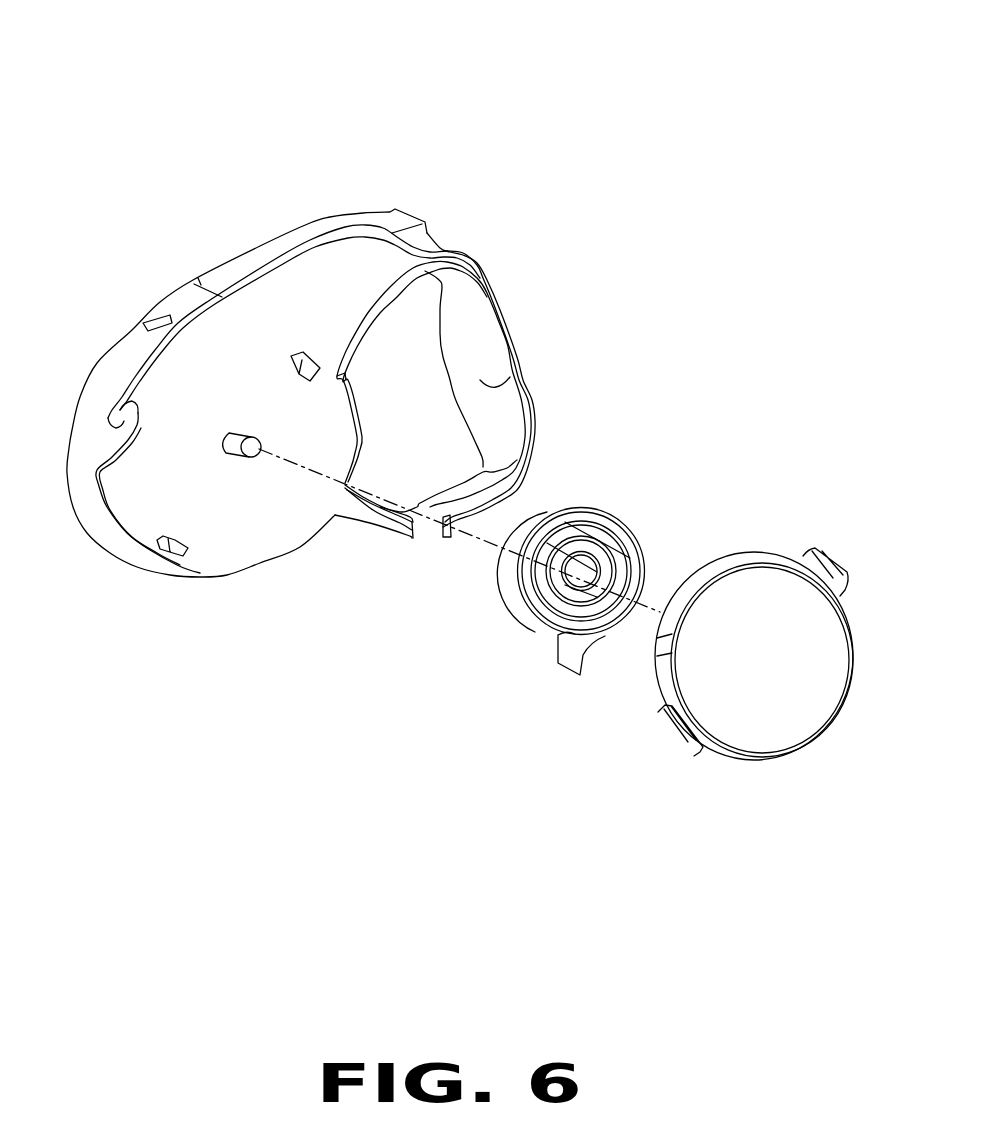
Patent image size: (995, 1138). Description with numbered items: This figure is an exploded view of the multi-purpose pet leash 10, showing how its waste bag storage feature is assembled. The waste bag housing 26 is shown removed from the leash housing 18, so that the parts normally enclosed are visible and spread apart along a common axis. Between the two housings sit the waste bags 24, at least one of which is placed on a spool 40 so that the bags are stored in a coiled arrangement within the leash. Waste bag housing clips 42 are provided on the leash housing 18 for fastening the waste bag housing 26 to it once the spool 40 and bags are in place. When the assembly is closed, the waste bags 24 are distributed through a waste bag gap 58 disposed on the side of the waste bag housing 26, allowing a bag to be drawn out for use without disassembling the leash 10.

The multi-purpose pet leash 10 is at (596, 121).
The leash housing 18 is at (285, 235).
The waste bags 24 is at (560, 512).
The waste bag housing 26 is at (714, 615).
The spool 40 is at (233, 452).
The waste bag housing clips 42 is at (175, 540).
The waste bag gap 58 is at (656, 652).